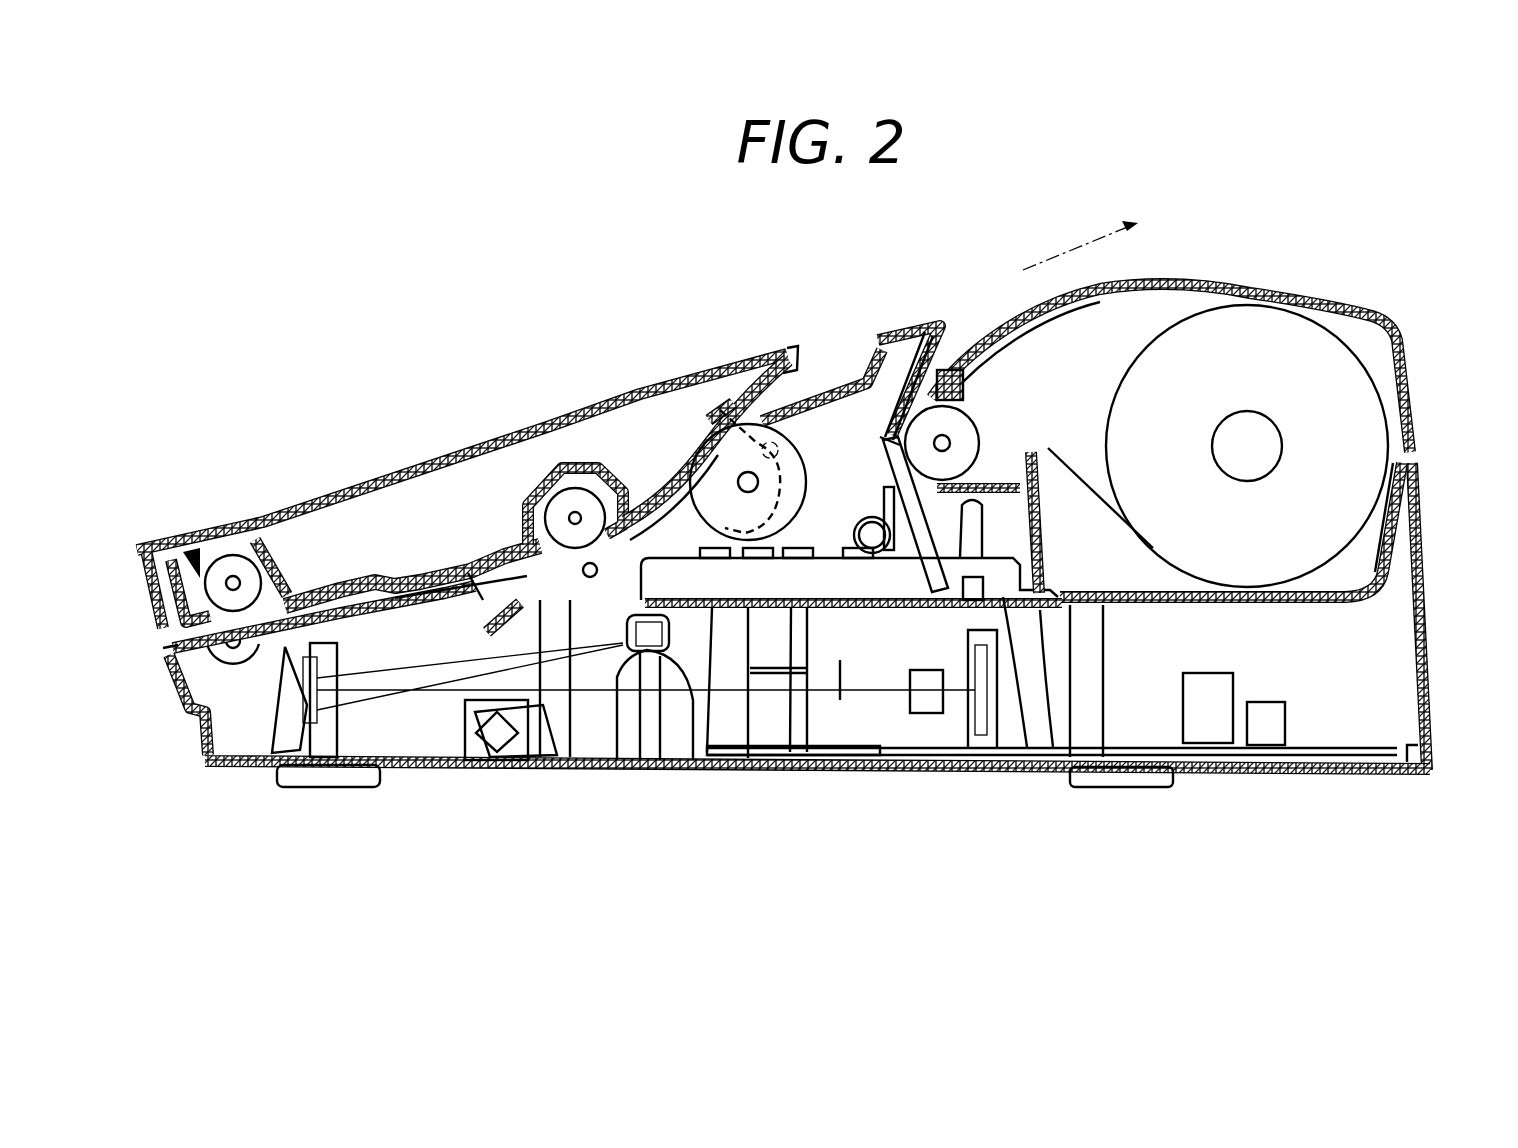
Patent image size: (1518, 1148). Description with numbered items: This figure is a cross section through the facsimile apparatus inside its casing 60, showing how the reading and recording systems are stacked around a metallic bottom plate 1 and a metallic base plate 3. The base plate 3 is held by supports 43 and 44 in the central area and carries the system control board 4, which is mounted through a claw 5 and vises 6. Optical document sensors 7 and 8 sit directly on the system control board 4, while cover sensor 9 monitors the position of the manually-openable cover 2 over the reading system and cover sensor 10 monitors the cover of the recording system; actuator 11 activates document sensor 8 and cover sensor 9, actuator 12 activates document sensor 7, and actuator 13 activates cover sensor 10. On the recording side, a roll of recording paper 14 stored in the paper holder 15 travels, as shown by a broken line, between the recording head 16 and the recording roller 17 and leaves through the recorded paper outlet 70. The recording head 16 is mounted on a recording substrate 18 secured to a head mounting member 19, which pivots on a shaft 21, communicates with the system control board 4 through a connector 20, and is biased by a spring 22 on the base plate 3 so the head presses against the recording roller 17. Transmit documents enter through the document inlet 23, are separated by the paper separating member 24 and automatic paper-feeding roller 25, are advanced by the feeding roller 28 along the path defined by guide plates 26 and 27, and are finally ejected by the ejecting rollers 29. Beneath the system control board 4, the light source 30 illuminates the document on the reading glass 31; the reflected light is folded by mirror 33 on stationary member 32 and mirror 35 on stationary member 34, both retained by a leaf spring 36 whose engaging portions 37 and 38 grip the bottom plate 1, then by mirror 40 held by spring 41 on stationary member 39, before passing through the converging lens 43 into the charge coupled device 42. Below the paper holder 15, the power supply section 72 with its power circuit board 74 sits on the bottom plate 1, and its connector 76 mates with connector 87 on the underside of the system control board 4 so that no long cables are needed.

The bottom plate 1 is at (950, 760).
The cover 2 is at (620, 393).
The base plate 3 is at (903, 560).
The system control board 4 is at (833, 608).
The claw 5 is at (630, 620).
The vises 6 is at (1040, 717).
The optical document sensor 7 is at (781, 608).
The optical document sensor 8 is at (680, 767).
The cover sensor 9 is at (763, 608).
The cover sensor 10 is at (1027, 733).
The actuator 11 is at (673, 497).
The actuator 12 is at (822, 553).
The actuator 13 is at (1000, 470).
The recording paper 14 is at (1270, 333).
The paper holder 15 is at (1317, 607).
The recording head 16 is at (960, 427).
The recording roller 17 is at (962, 375).
The recording substrate 18 is at (908, 425).
The head mounting member 19 is at (888, 433).
The connector 20 is at (947, 733).
The shaft 21 is at (920, 560).
The spring 22 is at (868, 605).
The document inlet 23 is at (790, 392).
The paper separating member 24 is at (727, 400).
The automatic paper-feeding roller 25 is at (727, 460).
The guide plate 26 is at (575, 512).
The guide plate 27 is at (380, 585).
The feeding roller 28 is at (585, 505).
The ejecting rollers 29 is at (250, 637).
The light source 30 is at (470, 583).
The reading glass 31 is at (447, 590).
The stationary member 32 is at (460, 750).
The mirror 33 is at (483, 747).
The stationary member 34 is at (320, 743).
The mirror 35 is at (307, 723).
The leaf spring 36 is at (270, 733).
The engaging portion 37 is at (543, 757).
The engaging portion 38 is at (270, 767).
The stationary member 39 is at (637, 747).
The mirror 40 is at (650, 755).
The spring 41 is at (640, 743).
The charge coupled device 42 is at (983, 760).
The converging lens 43 is at (560, 700).
The support 44 is at (1087, 733).
The casing 60 is at (1423, 570).
The recorded paper outlet 70 is at (1003, 317).
The power supply section 72 is at (1400, 723).
The power circuit board 74 is at (1267, 760).
The connector 76 is at (797, 733).
The connector 87 is at (750, 638).